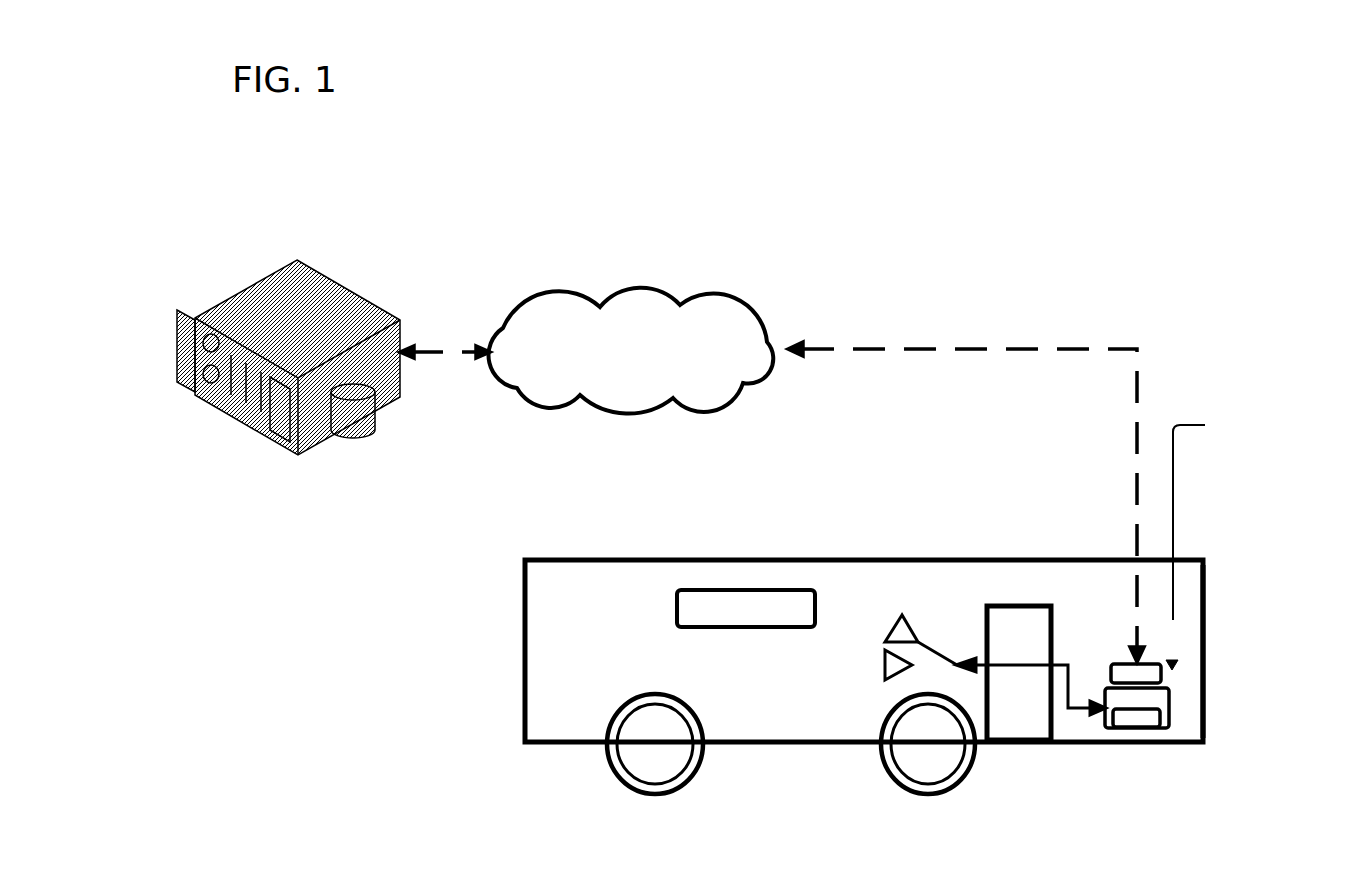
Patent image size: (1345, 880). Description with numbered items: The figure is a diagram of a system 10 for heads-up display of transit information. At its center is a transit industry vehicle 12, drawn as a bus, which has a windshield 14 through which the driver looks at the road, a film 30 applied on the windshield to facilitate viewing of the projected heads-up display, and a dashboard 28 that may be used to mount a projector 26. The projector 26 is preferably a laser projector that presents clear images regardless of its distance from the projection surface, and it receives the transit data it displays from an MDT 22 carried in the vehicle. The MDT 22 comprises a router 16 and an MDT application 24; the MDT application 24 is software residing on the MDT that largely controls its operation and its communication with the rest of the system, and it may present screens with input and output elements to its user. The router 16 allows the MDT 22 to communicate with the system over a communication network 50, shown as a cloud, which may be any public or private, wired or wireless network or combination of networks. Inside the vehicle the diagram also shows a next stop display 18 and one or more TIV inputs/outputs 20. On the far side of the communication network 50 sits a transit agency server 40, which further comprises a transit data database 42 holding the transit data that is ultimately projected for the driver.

The system for heads-up display of transit information 10 is at (993, 148).
The transit industry vehicle 12 is at (760, 560).
The windshield 14 is at (1203, 575).
The router 16 is at (1172, 670).
The next stop display 18 is at (748, 630).
The TIV inputs/outputs 20 is at (872, 643).
The MDT 22 is at (1168, 705).
The MDT application 24 is at (1133, 727).
The projector 26 is at (1140, 663).
The dashboard 28 is at (1206, 518).
The film 30 is at (1203, 600).
The transit agency server 40 is at (313, 438).
The transit data database 42 is at (373, 412).
The communication network 50 is at (634, 290).